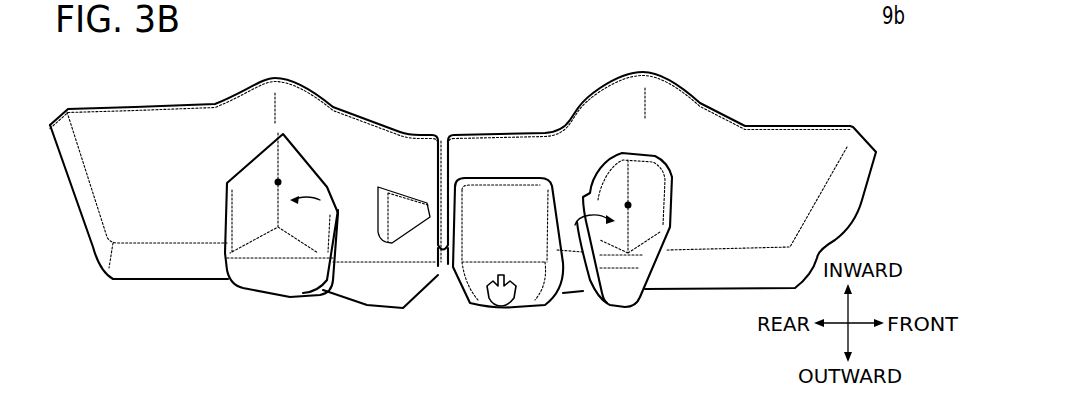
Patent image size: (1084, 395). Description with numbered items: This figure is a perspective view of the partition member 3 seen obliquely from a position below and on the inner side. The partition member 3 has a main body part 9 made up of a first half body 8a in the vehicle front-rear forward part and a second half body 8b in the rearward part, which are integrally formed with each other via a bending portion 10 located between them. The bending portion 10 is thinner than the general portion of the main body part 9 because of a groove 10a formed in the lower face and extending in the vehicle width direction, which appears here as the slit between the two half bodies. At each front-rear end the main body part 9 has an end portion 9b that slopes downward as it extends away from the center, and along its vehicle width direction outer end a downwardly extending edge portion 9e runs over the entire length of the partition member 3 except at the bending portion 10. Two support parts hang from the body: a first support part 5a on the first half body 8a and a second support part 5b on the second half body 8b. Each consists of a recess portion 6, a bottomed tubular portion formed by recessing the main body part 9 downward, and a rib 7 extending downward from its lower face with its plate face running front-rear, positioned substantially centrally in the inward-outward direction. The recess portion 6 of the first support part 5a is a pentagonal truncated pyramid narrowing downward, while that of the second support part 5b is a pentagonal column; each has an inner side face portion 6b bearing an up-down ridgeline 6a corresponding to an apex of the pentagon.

The partition member 3 is at (488, 199).
The first support part 5a is at (628, 230).
The second support part 5b is at (452, 253).
The recess portion 6 is at (452, 253).
The ridgeline 6a is at (452, 253).
The side face portion 6b is at (452, 253).
The rib 7 is at (250, 203).
The first half body 8a is at (488, 194).
The second half body 8b is at (488, 194).
The main body part 9 is at (488, 194).
The end portion 9b is at (488, 194).
The downwardly extending edge portion 9e is at (488, 194).
The bending portion 10 is at (488, 194).
The groove 10a is at (413, 106).